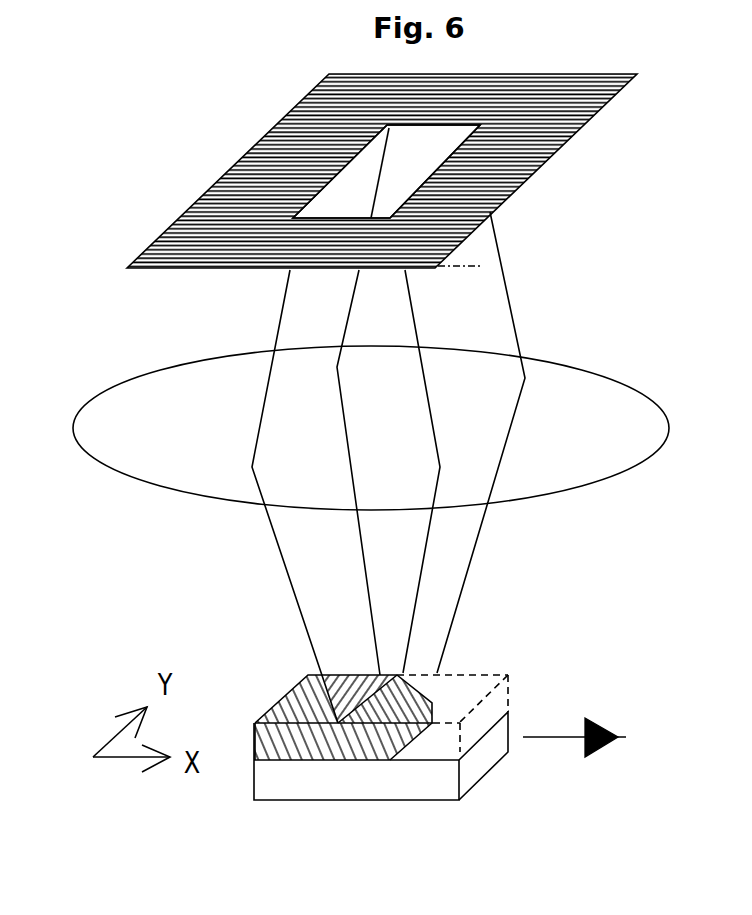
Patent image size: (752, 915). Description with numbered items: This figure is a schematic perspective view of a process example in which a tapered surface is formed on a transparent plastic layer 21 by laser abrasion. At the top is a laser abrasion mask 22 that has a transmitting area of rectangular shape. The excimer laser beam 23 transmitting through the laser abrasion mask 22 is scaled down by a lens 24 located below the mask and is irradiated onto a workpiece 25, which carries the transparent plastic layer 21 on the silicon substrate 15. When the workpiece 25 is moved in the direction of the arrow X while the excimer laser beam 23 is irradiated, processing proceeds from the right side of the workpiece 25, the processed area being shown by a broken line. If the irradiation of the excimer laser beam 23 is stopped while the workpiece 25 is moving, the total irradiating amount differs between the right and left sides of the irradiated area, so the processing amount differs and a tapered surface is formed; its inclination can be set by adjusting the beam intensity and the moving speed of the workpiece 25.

The silicon substrate 15 is at (302, 822).
The transparent plastic layer 21 is at (294, 698).
The laser abrasion mask 22 is at (576, 170).
The excimer laser beam 23 is at (503, 262).
The lens 24 is at (551, 520).
The workpiece 25 is at (553, 665).